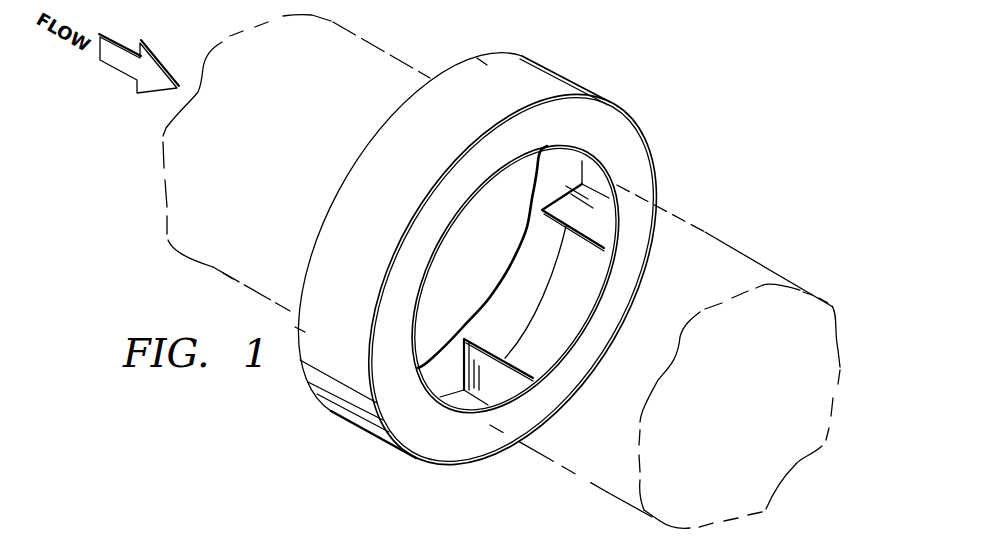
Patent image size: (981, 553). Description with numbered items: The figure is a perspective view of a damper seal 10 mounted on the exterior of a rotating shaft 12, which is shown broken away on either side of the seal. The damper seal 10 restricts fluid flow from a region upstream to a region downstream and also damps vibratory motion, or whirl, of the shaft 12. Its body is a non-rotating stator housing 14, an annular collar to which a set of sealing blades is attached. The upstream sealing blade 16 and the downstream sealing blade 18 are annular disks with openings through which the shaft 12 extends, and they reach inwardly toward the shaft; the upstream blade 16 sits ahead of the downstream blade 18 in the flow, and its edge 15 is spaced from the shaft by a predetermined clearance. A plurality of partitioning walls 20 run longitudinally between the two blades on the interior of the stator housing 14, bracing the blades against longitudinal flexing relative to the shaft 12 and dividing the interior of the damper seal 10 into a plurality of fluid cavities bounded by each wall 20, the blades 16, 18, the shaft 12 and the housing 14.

The damper seal 10 is at (372, 96).
The shaft 12 is at (717, 250).
The stator housing 14 is at (563, 75).
The edge 15 is at (477, 317).
The upstream sealing blade 16 is at (507, 313).
The downstream sealing blade 18 is at (623, 140).
The partitioning walls 20 is at (597, 227).